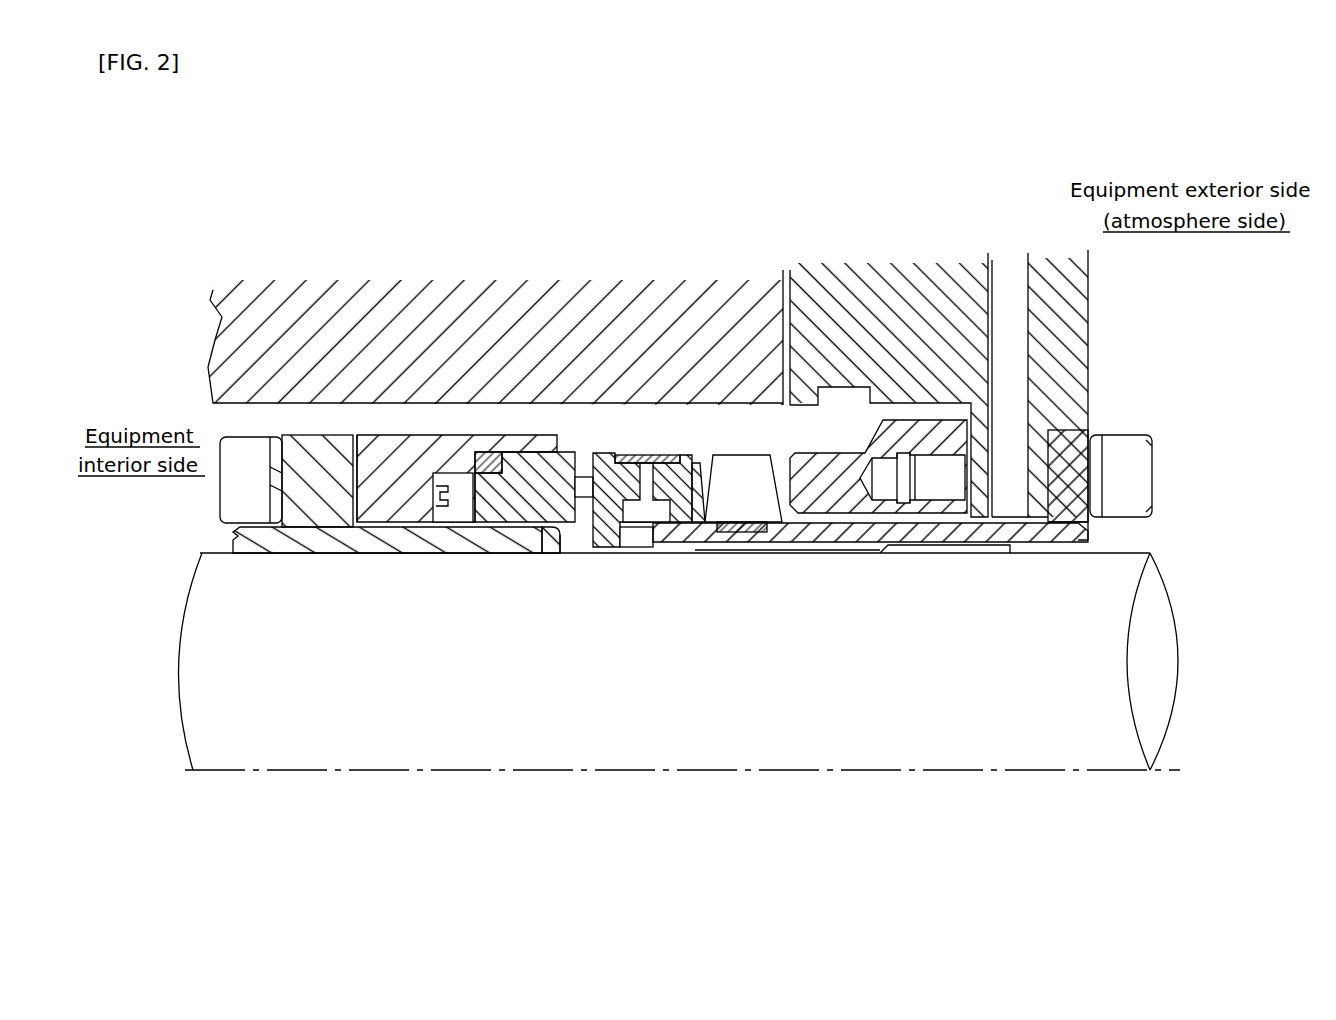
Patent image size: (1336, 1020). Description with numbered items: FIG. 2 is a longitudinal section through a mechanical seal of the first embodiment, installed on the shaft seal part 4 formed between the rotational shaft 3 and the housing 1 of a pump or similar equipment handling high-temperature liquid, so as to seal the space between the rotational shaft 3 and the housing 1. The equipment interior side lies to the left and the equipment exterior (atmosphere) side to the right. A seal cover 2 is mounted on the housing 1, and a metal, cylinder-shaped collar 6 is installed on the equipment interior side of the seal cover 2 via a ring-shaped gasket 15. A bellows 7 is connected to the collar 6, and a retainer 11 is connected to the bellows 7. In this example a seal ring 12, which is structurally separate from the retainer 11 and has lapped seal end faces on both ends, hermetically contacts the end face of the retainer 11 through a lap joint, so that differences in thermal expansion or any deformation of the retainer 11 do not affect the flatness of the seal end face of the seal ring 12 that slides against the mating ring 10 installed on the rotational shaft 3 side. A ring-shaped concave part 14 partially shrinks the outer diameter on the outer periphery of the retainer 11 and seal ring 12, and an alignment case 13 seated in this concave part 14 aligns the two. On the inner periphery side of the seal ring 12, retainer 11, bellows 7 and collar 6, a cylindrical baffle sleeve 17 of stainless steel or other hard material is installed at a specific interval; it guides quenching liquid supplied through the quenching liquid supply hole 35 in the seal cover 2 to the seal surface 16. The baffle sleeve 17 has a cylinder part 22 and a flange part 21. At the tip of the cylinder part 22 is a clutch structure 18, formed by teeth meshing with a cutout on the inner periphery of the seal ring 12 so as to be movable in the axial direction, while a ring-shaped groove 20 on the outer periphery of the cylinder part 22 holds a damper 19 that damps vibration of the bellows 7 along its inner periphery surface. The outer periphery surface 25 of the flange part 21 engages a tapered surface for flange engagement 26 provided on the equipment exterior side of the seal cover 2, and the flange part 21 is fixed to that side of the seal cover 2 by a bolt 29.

The housing 1 is at (627, 295).
The seal cover 2 is at (890, 287).
The rotational shaft 3 is at (382, 725).
The shaft seal part 4 is at (593, 447).
The collar 6 is at (868, 450).
The bellows 7 is at (760, 455).
The mating ring 10 is at (467, 530).
The retainer 11 is at (708, 465).
The seal ring 12 is at (578, 530).
The alignment case 13 is at (662, 455).
The ring-shaped concave part 14 is at (627, 452).
The ring-shaped gasket 15 is at (1000, 457).
The seal surface 16 is at (543, 530).
The baffle sleeve 17 is at (888, 545).
The clutch structure 18 is at (622, 533).
The damper 19 is at (735, 532).
The ring-shaped groove 20 is at (800, 543).
The flange part 21 is at (1090, 523).
The cylinder part 22 is at (1007, 553).
The outer periphery surface 25 is at (1057, 428).
The tapered surface for flange engagement 26 is at (1105, 458).
The bolt 29 is at (1150, 468).
The quenching liquid supply hole 35 is at (1022, 293).